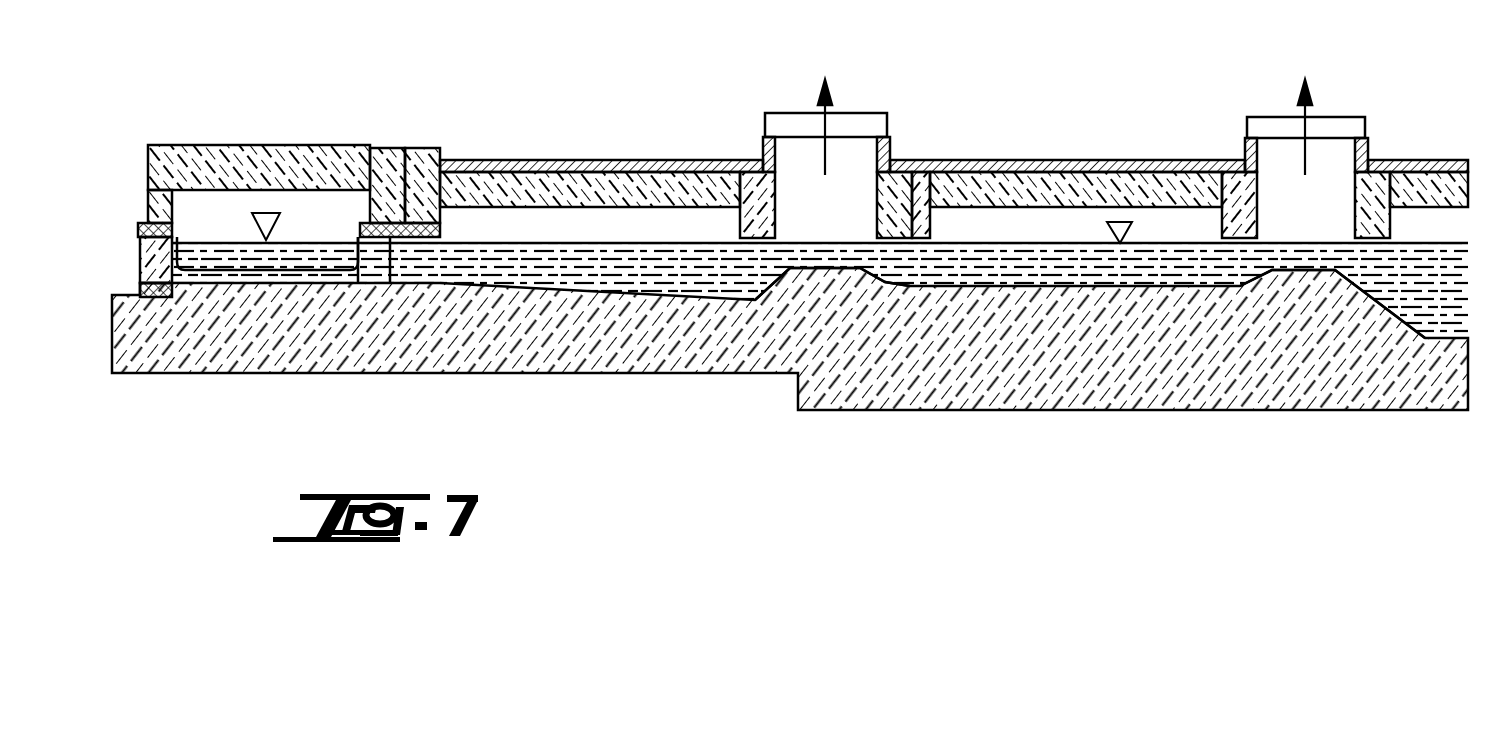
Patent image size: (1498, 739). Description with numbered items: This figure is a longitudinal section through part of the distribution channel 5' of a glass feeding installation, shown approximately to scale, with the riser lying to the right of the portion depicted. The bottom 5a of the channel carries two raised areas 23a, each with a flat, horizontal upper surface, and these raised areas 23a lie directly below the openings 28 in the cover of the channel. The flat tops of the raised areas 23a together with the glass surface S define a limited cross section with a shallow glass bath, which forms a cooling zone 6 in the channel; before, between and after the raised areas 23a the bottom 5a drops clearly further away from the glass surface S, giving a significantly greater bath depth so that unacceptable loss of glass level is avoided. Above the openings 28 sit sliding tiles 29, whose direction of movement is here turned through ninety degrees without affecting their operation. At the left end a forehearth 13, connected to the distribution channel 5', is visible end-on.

The distribution channel 5' is at (954, 105).
The bottom of the distribution channel 5a is at (828, 393).
The cooling zone 6 is at (836, 67).
The forehearth 13 is at (316, 222).
The raised areas of the bottom 23a is at (838, 278).
The openings 28 is at (845, 219).
The sliding tiles 29 is at (857, 126).
The glass surface S is at (1065, 236).